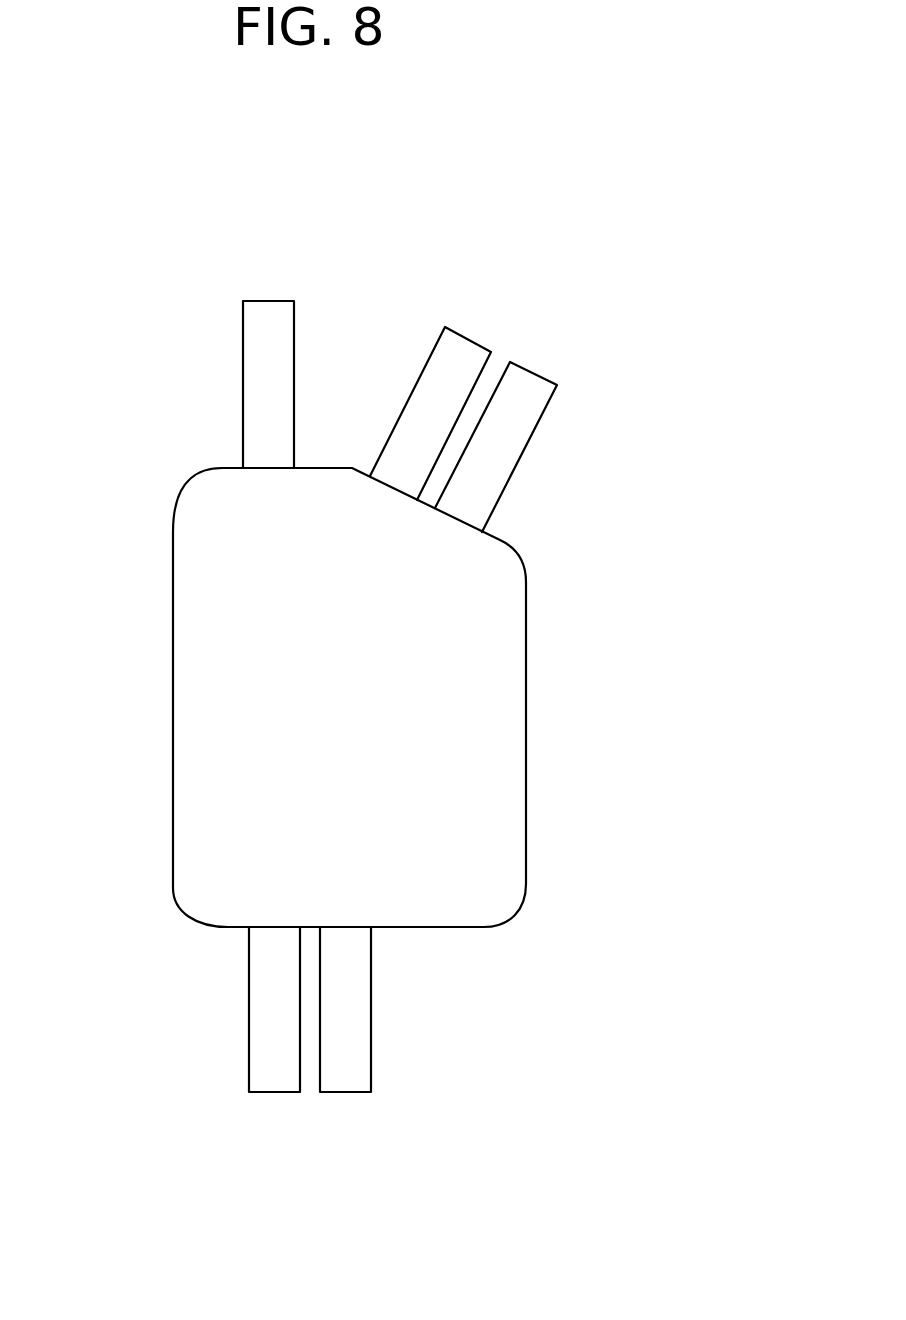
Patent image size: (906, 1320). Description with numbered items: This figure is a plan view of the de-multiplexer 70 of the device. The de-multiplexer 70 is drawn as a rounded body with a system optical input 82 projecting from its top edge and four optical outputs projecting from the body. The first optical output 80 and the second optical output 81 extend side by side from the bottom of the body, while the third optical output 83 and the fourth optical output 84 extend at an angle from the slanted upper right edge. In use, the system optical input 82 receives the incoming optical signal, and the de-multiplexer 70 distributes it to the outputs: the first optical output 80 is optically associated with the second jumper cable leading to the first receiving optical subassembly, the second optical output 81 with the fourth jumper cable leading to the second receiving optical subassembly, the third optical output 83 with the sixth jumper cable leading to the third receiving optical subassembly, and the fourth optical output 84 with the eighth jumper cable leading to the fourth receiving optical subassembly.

The de-multiplexer 70 is at (526, 650).
The first optical output 80 is at (277, 1092).
The second optical output 81 is at (371, 1061).
The system optical input 82 is at (243, 351).
The third optical output 83 is at (432, 353).
The fourth optical output 84 is at (534, 430).